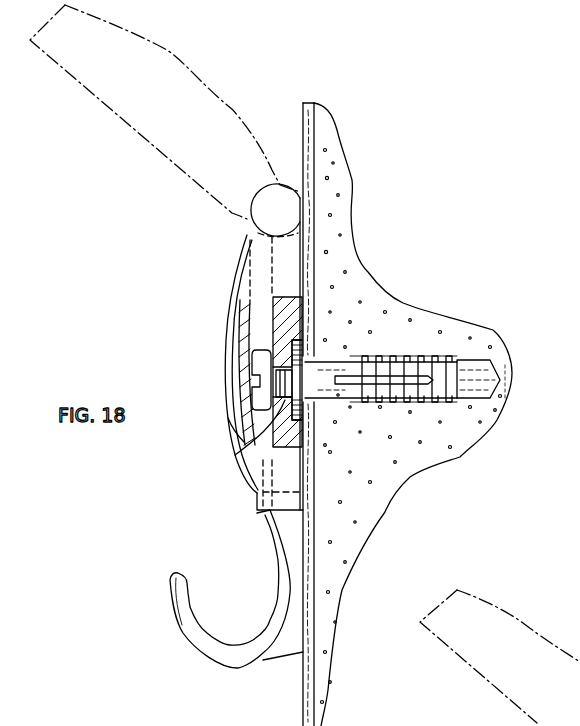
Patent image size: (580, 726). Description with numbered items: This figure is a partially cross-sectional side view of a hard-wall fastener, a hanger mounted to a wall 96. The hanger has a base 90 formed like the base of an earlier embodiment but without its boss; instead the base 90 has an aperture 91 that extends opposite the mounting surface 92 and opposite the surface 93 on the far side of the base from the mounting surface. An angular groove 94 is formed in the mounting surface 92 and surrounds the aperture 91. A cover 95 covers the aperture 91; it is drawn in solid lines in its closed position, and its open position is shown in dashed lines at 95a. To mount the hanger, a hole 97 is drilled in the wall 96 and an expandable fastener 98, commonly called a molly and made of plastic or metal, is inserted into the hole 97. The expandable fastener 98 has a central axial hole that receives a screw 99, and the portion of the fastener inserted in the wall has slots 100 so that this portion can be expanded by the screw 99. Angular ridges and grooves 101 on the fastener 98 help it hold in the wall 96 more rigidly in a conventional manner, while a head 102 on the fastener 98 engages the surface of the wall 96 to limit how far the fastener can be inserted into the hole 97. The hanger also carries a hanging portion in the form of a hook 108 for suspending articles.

The base 90 is at (303, 290).
The aperture 91 is at (242, 463).
The mounting surface 92 is at (290, 308).
The surface opposite the mounting surface 93 is at (273, 307).
The angular groove 94 is at (305, 352).
The cover 95 is at (243, 243).
The cover in open position 95a is at (201, 88).
The wall 96 is at (372, 513).
The hole 97 is at (477, 380).
The expandable fastener 98 is at (450, 358).
The screw 99 is at (257, 403).
The slots 100 is at (477, 447).
The angular ridges and grooves 101 is at (407, 357).
The head 102 is at (272, 328).
The hook 108 is at (177, 627).